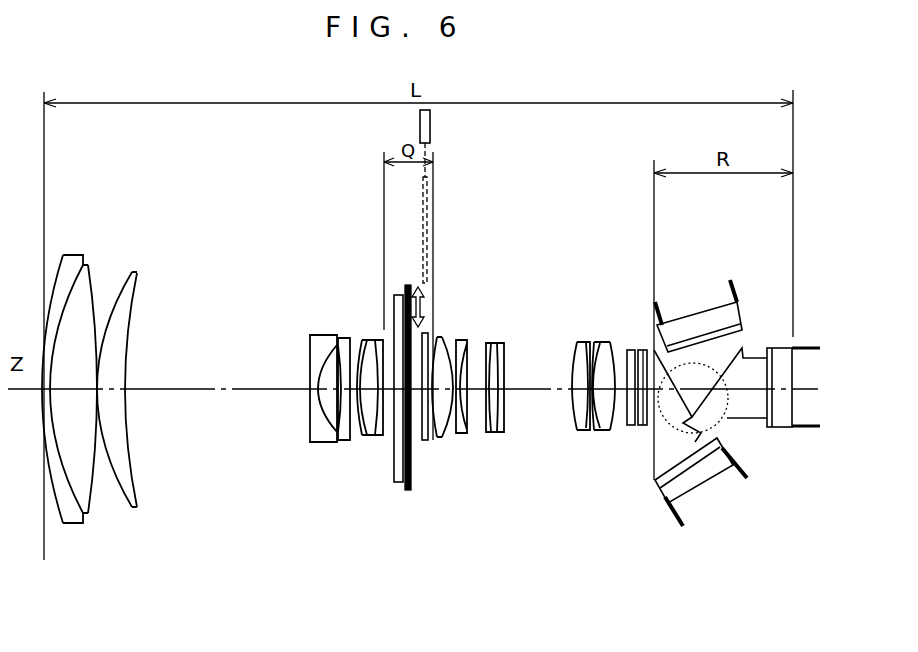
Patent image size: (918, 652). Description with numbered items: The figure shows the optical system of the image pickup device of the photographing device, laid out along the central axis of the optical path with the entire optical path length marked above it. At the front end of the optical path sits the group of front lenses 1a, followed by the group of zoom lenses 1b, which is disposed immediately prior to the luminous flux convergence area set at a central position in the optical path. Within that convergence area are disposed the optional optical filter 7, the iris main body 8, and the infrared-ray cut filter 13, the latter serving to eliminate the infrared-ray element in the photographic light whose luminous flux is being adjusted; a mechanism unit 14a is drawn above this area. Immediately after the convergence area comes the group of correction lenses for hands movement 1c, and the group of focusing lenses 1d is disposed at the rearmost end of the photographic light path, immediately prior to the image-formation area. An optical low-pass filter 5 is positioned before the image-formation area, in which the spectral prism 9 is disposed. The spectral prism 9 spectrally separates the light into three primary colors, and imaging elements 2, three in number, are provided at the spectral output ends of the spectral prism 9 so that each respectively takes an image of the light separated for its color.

The group of front lenses 1a is at (145, 243).
The group of zoom lenses 1b is at (382, 319).
The group of correction lenses for hands movement 1c is at (520, 319).
The group of focusing lenses 1d is at (618, 319).
The imaging elements 2 is at (695, 325).
The optical low-pass filter 5 is at (640, 426).
The optional optical filter 7 is at (410, 482).
The iris main body 8 is at (395, 440).
The spectral prism 9 is at (691, 433).
The infrared-ray cut filter 13 is at (428, 197).
The mechanism unit 14a is at (430, 128).